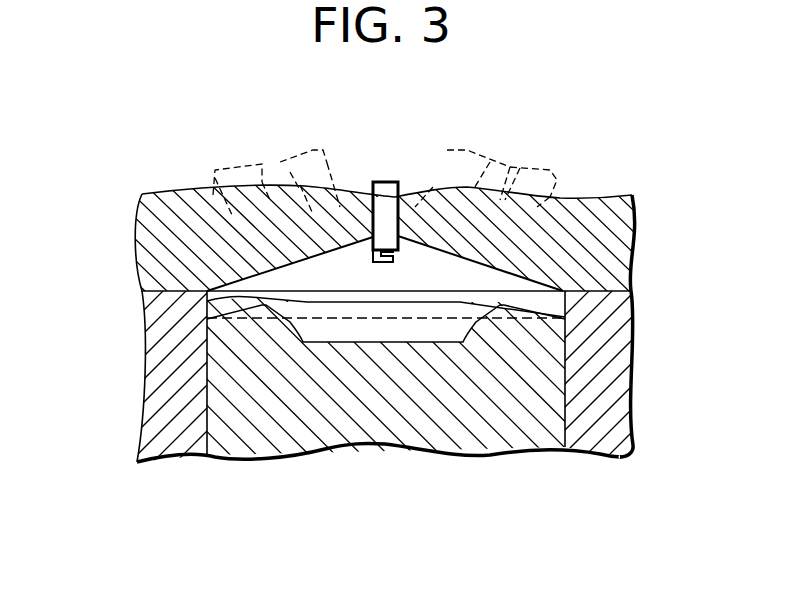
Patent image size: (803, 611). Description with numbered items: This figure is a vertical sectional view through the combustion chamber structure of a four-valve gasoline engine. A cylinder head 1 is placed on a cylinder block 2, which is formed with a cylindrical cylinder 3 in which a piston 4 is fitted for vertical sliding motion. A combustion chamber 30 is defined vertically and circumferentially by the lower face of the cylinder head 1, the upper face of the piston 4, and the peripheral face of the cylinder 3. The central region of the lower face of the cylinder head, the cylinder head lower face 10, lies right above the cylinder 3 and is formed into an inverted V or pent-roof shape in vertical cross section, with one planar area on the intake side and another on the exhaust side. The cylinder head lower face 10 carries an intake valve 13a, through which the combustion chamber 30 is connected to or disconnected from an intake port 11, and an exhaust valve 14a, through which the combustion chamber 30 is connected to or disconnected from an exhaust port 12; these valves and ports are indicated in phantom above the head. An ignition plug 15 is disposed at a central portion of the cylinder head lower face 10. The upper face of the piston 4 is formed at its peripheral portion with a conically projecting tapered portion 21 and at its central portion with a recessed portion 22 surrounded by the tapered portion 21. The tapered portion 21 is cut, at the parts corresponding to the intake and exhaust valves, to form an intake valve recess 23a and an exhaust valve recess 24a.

The cylinder head 1 is at (134, 255).
The cylinder block 2 is at (134, 349).
The cylinder 3 is at (207, 390).
The piston 4 is at (318, 450).
The cylinder head lower face 10 is at (262, 274).
The intake port 11 is at (433, 187).
The exhaust port 12 is at (337, 190).
The intake valve 13a is at (528, 168).
The exhaust valve 14a is at (246, 165).
The ignition plug 15 is at (386, 182).
The tapered portion 21 is at (490, 323).
The recessed portion 22 is at (432, 343).
The intake valve recess 23a is at (537, 282).
The exhaust valve recess 24a is at (175, 315).
The combustion chamber 30 is at (362, 284).